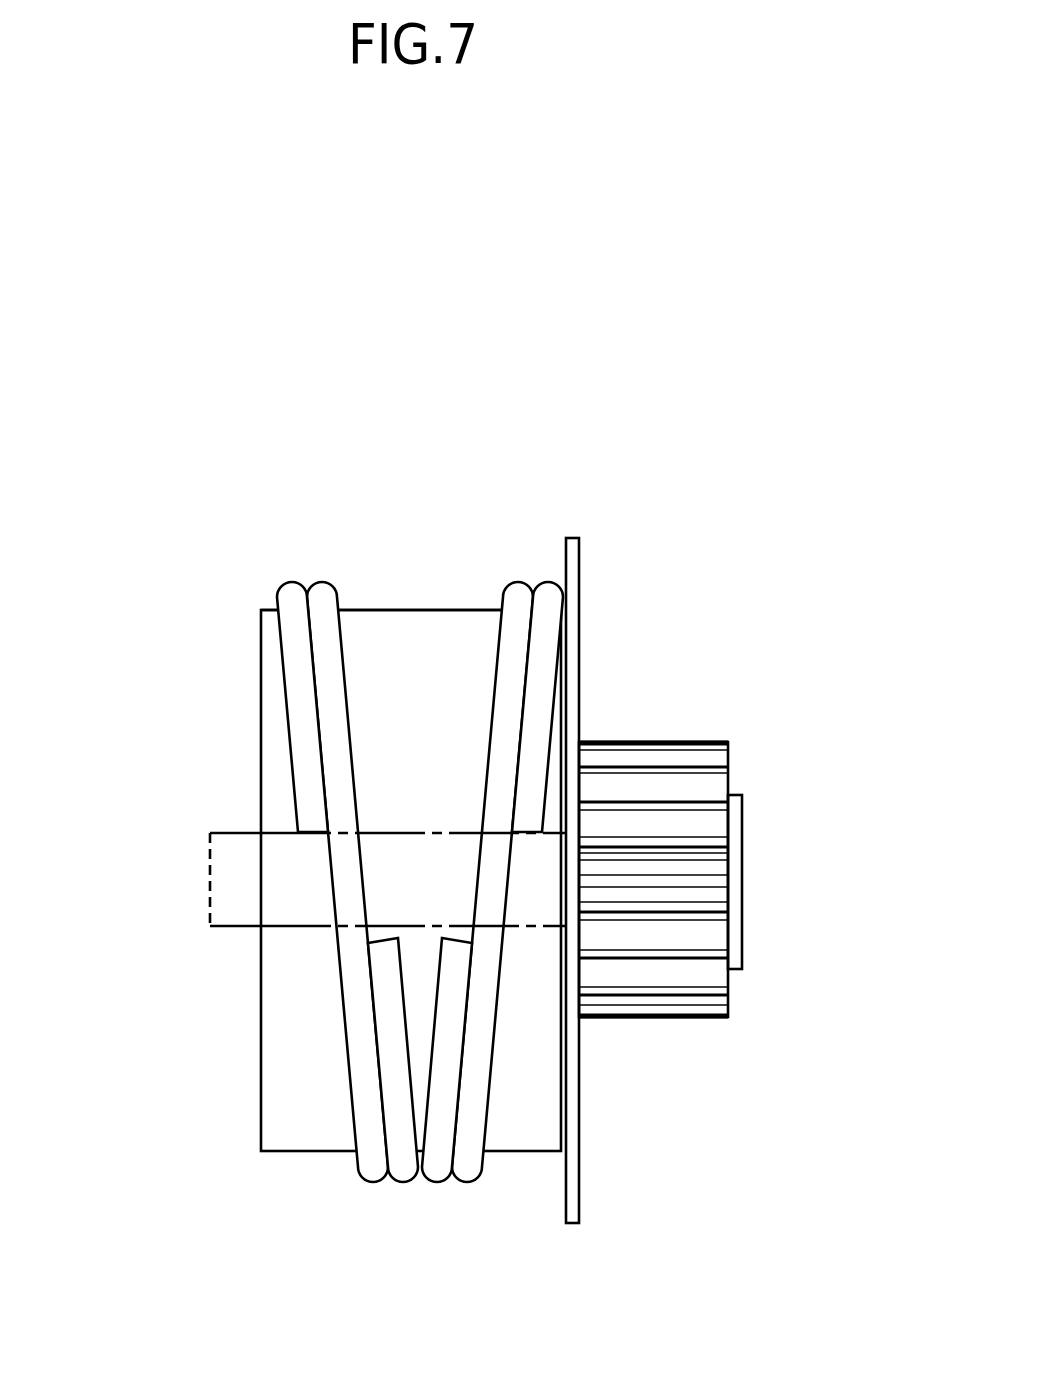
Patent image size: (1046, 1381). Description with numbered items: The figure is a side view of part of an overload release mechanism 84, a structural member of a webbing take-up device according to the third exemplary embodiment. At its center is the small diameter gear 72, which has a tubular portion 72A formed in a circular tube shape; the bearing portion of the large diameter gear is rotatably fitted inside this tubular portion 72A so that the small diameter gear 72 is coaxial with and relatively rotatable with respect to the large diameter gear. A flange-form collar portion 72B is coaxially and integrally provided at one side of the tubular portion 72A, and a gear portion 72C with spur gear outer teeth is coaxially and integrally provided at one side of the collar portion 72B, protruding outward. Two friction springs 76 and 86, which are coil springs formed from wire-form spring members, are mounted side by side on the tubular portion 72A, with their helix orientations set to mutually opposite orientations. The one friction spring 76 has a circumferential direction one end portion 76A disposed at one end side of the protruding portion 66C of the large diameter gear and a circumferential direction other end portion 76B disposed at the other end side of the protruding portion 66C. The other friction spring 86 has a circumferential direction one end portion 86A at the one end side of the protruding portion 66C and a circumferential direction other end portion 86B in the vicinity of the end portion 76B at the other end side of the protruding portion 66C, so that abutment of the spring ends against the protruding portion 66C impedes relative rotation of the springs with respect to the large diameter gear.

The overload release mechanism 84 is at (549, 326).
The small diameter gear 72 is at (318, 1154).
The tubular portion 72A is at (418, 608).
The collar portion 72B is at (565, 1226).
The gear portion 72C is at (731, 779).
The friction spring 76 is at (265, 810).
The circumferential direction one end portion 76A is at (292, 810).
The circumferential direction other end portion 76B is at (385, 960).
The friction spring 86 is at (575, 810).
The circumferential direction one end portion 86A is at (530, 803).
The circumferential direction other end portion 86B is at (455, 962).
The protruding portion 66C is at (208, 885).